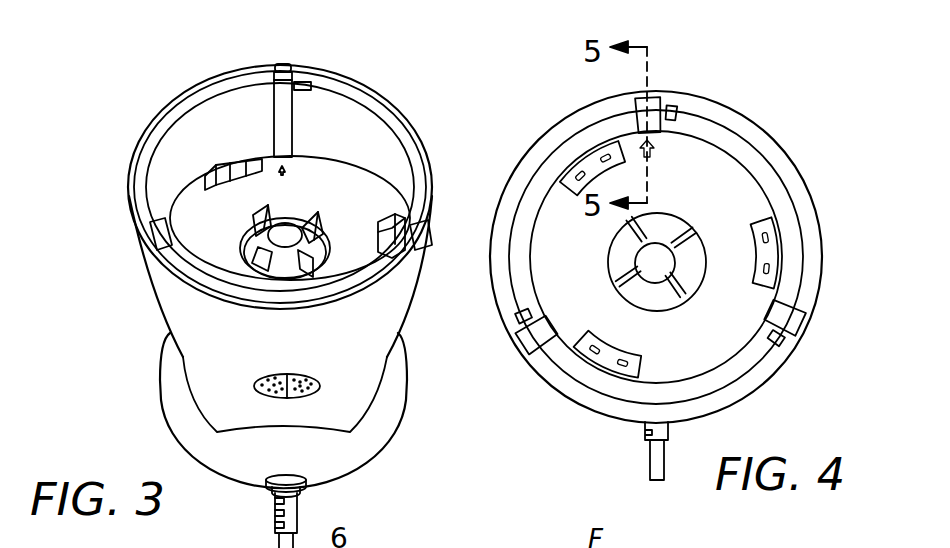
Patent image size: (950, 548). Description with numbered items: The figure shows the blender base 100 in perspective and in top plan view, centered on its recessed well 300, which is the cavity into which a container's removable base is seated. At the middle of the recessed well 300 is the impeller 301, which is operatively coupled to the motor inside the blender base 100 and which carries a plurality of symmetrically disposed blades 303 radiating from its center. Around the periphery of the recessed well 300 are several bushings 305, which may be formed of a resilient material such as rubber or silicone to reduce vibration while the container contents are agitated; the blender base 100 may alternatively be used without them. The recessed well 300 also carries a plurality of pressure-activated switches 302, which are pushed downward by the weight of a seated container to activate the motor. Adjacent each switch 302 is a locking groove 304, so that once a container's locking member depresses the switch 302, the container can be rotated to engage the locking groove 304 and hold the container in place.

In FIG. 3, the blender base 100 is at (170, 301).
In FIG. 4, the blender base 100 is at (775, 140).
In FIG. 3, the recessed well 300 is at (382, 220).
In FIG. 4, the recessed well 300 is at (700, 194).
In FIG. 3, the impeller 301 is at (283, 232).
In FIG. 4, the impeller 301 is at (658, 262).
In FIG. 3, the pressure-activated switches 302 is at (282, 107).
In FIG. 4, the pressure-activated switches 302 is at (650, 120).
In FIG. 3, the blades 303 is at (257, 250).
In FIG. 4, the blades 303 is at (680, 238).
In FIG. 3, the locking groove 304 is at (300, 84).
In FIG. 4, the locking groove 304 is at (522, 318).
In FIG. 3, the bushings 305 is at (235, 172).
In FIG. 4, the bushings 305 is at (590, 170).